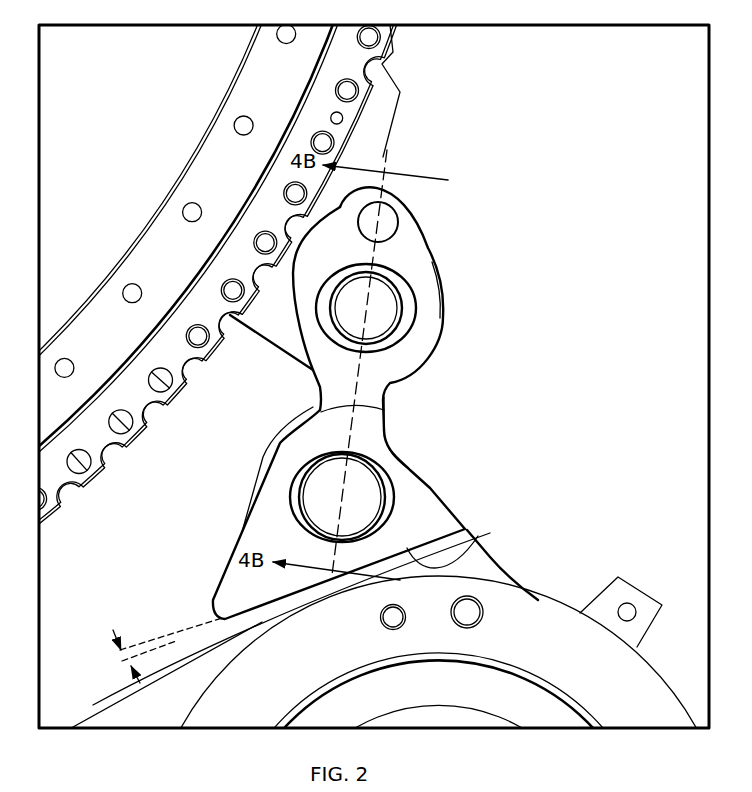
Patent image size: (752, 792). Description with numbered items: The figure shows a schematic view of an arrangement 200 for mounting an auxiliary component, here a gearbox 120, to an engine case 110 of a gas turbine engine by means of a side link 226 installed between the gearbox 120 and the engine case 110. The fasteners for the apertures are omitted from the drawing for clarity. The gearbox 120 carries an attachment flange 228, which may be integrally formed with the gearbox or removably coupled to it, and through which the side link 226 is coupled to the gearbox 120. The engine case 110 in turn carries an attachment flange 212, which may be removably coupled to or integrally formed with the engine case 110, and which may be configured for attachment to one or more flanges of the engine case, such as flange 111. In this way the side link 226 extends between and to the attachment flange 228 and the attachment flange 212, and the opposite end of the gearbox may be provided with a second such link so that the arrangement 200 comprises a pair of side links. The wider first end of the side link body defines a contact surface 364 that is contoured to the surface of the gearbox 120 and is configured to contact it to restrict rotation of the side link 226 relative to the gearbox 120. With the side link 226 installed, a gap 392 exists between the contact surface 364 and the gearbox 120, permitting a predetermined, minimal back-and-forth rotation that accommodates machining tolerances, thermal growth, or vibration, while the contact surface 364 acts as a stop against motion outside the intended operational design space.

The engine case 110 is at (137, 229).
The flange 111 is at (383, 37).
The gearbox 120 is at (540, 600).
The arrangement 200 is at (572, 118).
The attachment flange 212 is at (403, 150).
The side link 226 is at (385, 401).
The attachment flange 228 is at (407, 447).
The contact surface 364 is at (482, 534).
The gap 392 is at (122, 656).